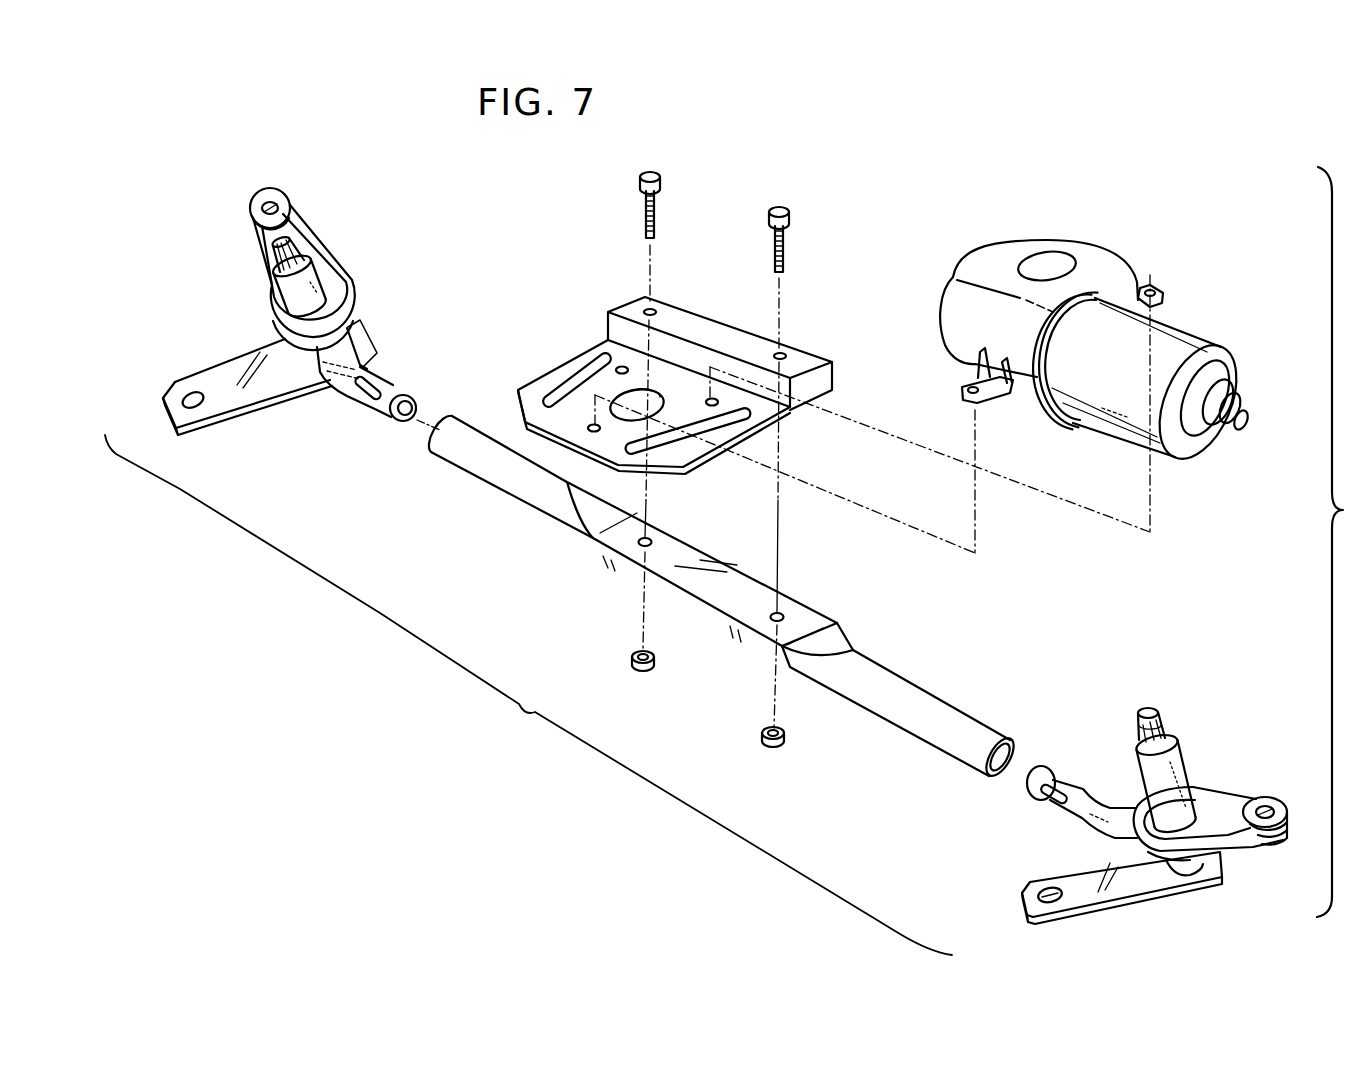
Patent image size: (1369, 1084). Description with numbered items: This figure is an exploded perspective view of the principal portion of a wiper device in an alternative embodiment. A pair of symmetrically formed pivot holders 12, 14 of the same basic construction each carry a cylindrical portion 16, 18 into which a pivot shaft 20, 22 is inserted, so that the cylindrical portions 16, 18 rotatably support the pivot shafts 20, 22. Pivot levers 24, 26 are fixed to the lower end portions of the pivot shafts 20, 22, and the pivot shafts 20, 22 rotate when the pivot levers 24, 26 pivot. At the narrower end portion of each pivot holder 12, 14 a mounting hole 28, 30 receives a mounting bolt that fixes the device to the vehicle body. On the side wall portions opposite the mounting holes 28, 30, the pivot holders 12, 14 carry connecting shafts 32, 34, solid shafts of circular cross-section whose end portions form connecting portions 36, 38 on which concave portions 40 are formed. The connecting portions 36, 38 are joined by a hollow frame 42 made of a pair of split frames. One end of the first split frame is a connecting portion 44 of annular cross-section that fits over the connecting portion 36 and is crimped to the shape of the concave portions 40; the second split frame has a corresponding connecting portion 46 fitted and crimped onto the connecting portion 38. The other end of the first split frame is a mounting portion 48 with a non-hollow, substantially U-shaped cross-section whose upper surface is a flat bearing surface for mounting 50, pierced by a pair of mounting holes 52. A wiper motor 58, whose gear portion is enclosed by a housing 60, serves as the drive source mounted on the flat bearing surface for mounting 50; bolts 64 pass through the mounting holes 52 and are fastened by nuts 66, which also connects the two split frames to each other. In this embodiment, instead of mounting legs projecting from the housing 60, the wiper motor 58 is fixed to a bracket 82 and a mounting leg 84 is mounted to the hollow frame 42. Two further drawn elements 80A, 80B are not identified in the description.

The pivot holder 12 is at (329, 282).
The pivot holder 14 is at (1234, 787).
The cylindrical portion 16 is at (352, 289).
The cylindrical portion 18 is at (1180, 745).
The pivot shaft 20 is at (294, 223).
The pivot shaft 22 is at (1149, 708).
The pivot lever 24 is at (241, 418).
The pivot lever 26 is at (1033, 884).
The mounting hole 28 is at (272, 205).
The mounting hole 30 is at (1261, 800).
The connecting shaft 32 is at (332, 396).
The connecting shaft 34 is at (1084, 835).
The connecting portion 36 is at (381, 418).
The connecting portion 38 is at (1045, 777).
The concave portions 40 is at (372, 366).
The hollow frame 42 is at (713, 578).
The connecting portion 44 is at (454, 414).
The connecting portion 46 is at (985, 776).
The mounting portion 48 is at (728, 642).
The flat bearing surface for mounting 50 is at (733, 602).
The mounting holes 52 is at (643, 548).
The wiper motor 58 is at (1082, 347).
The housing 60 is at (962, 259).
The bolts 64 is at (645, 217).
The nuts 66 is at (631, 662).
The mounting tab 80A is at (961, 392).
The mounting tab 80B is at (1162, 291).
The bracket 82 is at (686, 384).
The mounting leg 84 is at (807, 355).